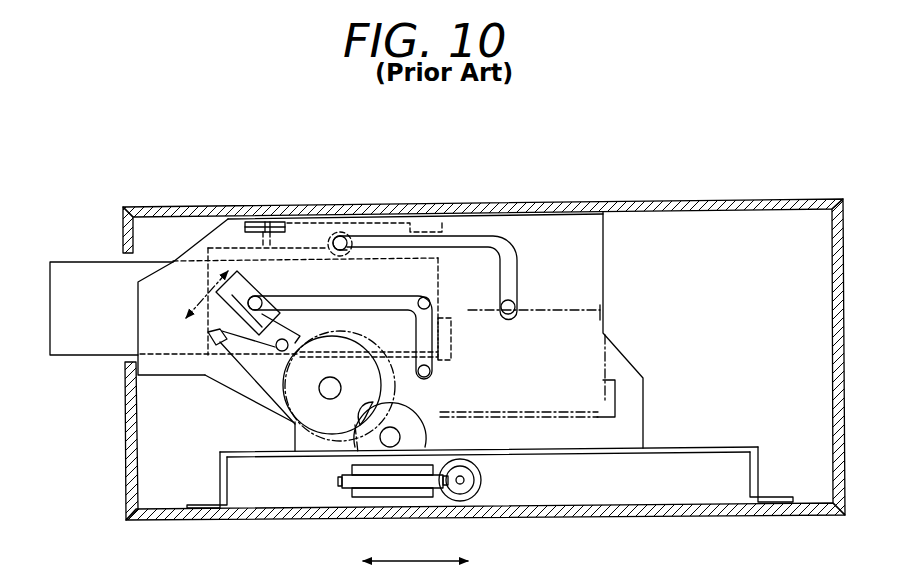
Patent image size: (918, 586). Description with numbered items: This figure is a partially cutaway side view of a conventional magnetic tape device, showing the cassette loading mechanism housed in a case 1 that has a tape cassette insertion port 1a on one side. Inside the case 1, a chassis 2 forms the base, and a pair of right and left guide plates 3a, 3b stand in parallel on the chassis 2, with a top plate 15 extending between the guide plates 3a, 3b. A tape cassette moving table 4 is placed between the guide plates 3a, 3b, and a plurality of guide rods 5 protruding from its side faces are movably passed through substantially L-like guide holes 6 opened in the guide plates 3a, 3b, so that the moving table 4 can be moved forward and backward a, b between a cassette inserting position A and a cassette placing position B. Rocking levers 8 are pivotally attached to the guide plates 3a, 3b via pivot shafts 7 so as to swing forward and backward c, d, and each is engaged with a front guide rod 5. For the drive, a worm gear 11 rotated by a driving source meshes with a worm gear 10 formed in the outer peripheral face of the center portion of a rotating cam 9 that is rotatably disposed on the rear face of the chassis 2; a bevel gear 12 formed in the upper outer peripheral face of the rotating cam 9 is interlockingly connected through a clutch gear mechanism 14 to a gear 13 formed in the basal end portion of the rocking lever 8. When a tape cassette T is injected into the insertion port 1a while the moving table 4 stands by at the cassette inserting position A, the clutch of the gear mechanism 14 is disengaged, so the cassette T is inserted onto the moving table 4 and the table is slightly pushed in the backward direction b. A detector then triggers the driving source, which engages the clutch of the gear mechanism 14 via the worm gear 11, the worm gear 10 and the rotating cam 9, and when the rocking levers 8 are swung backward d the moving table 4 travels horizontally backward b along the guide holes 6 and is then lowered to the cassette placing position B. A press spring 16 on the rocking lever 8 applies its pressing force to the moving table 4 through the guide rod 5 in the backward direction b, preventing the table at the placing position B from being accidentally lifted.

The case 1 is at (684, 199).
The tape cassette insertion port 1a is at (124, 254).
The chassis 2 is at (706, 447).
The guide plate 3a is at (591, 330).
The guide plate 3b is at (585, 270).
The tape cassette moving table 4 is at (455, 360).
The guide rod 5 is at (262, 297).
The guide hole 6 is at (350, 250).
The pivot shaft 7 is at (322, 397).
The rocking lever 8 is at (245, 366).
The rotating cam 9 is at (326, 477).
The worm gear 10 is at (337, 482).
The worm gear 11 is at (482, 478).
The bevel gear 12 is at (440, 446).
The gear 13 is at (392, 358).
The clutch gear mechanism 14 is at (418, 403).
The top plate 15 is at (357, 218).
The press spring 16 is at (207, 331).
The tape cassette T is at (77, 356).
The cassette inserting position A is at (284, 204).
The cassette placing position B is at (468, 202).
The forward motion direction a is at (419, 561).
The backward motion direction b is at (419, 561).
The forward swing direction c is at (200, 295).
The backward swing direction d is at (200, 295).